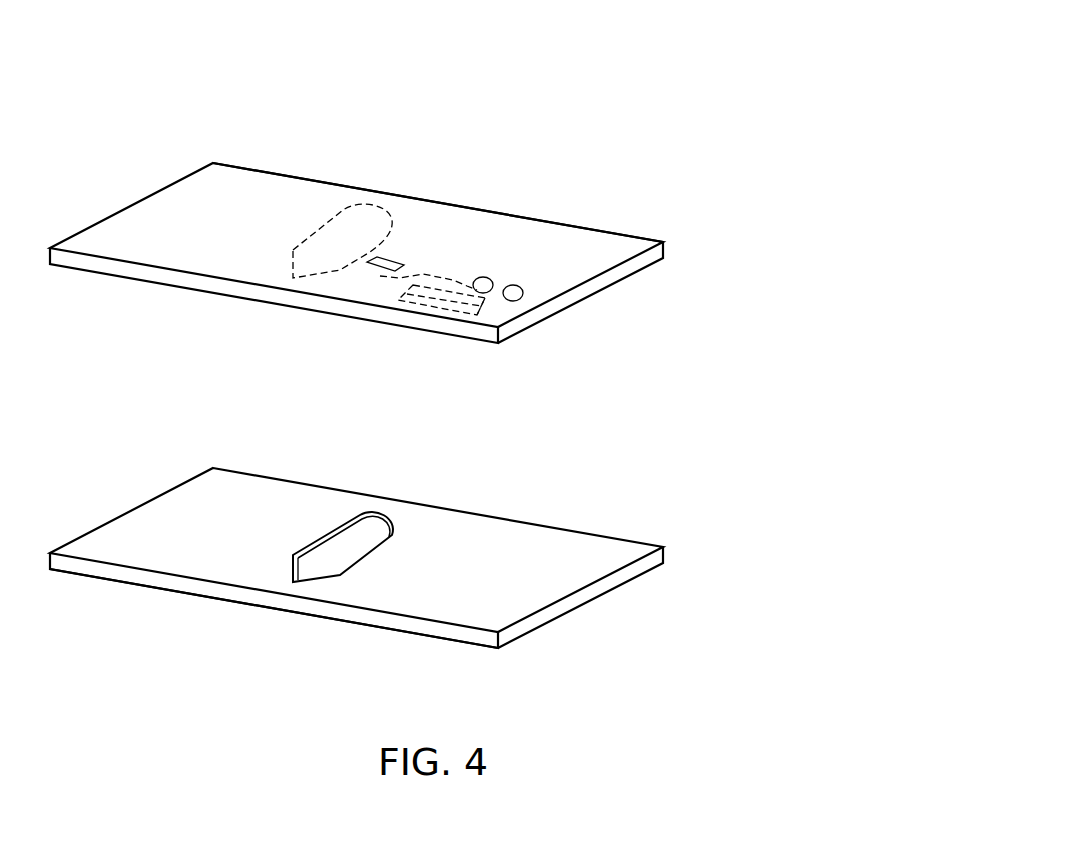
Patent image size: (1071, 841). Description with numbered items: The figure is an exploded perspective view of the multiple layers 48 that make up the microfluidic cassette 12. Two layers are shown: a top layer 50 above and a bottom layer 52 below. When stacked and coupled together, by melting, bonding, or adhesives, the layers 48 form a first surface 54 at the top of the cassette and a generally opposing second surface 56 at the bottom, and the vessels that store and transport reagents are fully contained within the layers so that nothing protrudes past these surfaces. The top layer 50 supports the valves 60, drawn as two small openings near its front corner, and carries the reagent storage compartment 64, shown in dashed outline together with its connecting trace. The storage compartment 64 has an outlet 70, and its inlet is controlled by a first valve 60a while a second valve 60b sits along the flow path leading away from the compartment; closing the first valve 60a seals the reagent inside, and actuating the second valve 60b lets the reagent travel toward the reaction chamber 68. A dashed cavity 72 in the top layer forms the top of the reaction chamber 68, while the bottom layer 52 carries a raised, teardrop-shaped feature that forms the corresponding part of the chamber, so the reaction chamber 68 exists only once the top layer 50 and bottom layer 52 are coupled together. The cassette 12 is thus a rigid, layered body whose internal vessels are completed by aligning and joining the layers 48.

The microfluidic cassette 12 is at (740, 81).
The layers 48 is at (670, 247).
The top layer 50 is at (627, 233).
The bottom layer 52 is at (665, 552).
The first surface 54 is at (532, 243).
The second surface 56 is at (420, 636).
The valves 60 is at (539, 281).
The first valve 60a is at (512, 303).
The second valve 60b is at (482, 276).
The reagent storage compartment 64 is at (393, 257).
The reaction chamber 68 is at (361, 512).
The outlet 70 is at (497, 300).
The cavity 72 is at (372, 207).